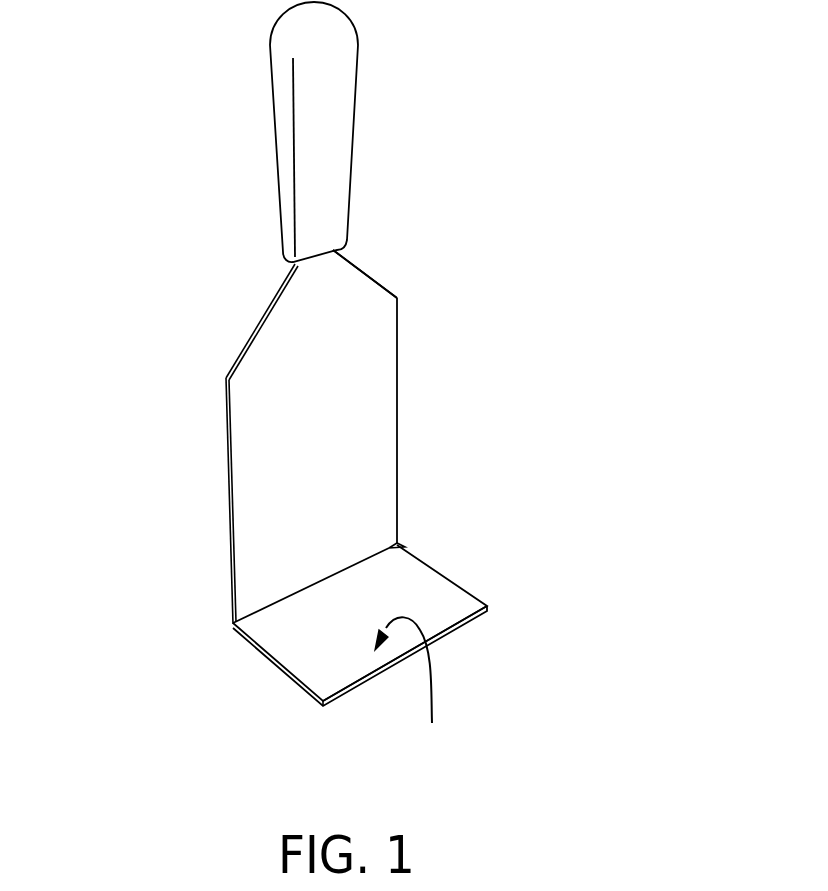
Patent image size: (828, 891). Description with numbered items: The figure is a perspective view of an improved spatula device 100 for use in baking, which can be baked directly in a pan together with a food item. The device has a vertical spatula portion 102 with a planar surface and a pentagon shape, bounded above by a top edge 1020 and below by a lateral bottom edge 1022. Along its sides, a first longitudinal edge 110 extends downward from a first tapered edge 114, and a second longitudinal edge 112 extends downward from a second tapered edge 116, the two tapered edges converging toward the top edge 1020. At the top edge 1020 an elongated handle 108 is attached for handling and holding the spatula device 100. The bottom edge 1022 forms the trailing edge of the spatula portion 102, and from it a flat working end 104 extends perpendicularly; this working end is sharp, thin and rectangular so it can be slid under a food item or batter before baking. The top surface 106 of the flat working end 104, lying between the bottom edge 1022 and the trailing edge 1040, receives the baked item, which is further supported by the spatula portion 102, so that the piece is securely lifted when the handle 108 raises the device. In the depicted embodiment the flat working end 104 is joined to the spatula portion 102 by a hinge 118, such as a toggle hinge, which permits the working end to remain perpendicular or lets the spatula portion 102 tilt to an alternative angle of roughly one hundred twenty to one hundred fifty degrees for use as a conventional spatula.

The spatula device 100 is at (195, 200).
The vertical spatula portion 102 is at (350, 426).
The flat working end 104 is at (414, 646).
The top surface 106 is at (413, 685).
The elongated handle 108 is at (322, 128).
The first longitudinal edge 110 is at (227, 505).
The second longitudinal edge 112 is at (398, 422).
The first tapered edge 114 is at (267, 310).
The second tapered edge 116 is at (372, 282).
The hinge 118 is at (227, 625).
The top edge 1020 is at (323, 270).
The bottom edge 1022 is at (402, 546).
The trailing edge 1040 is at (465, 622).